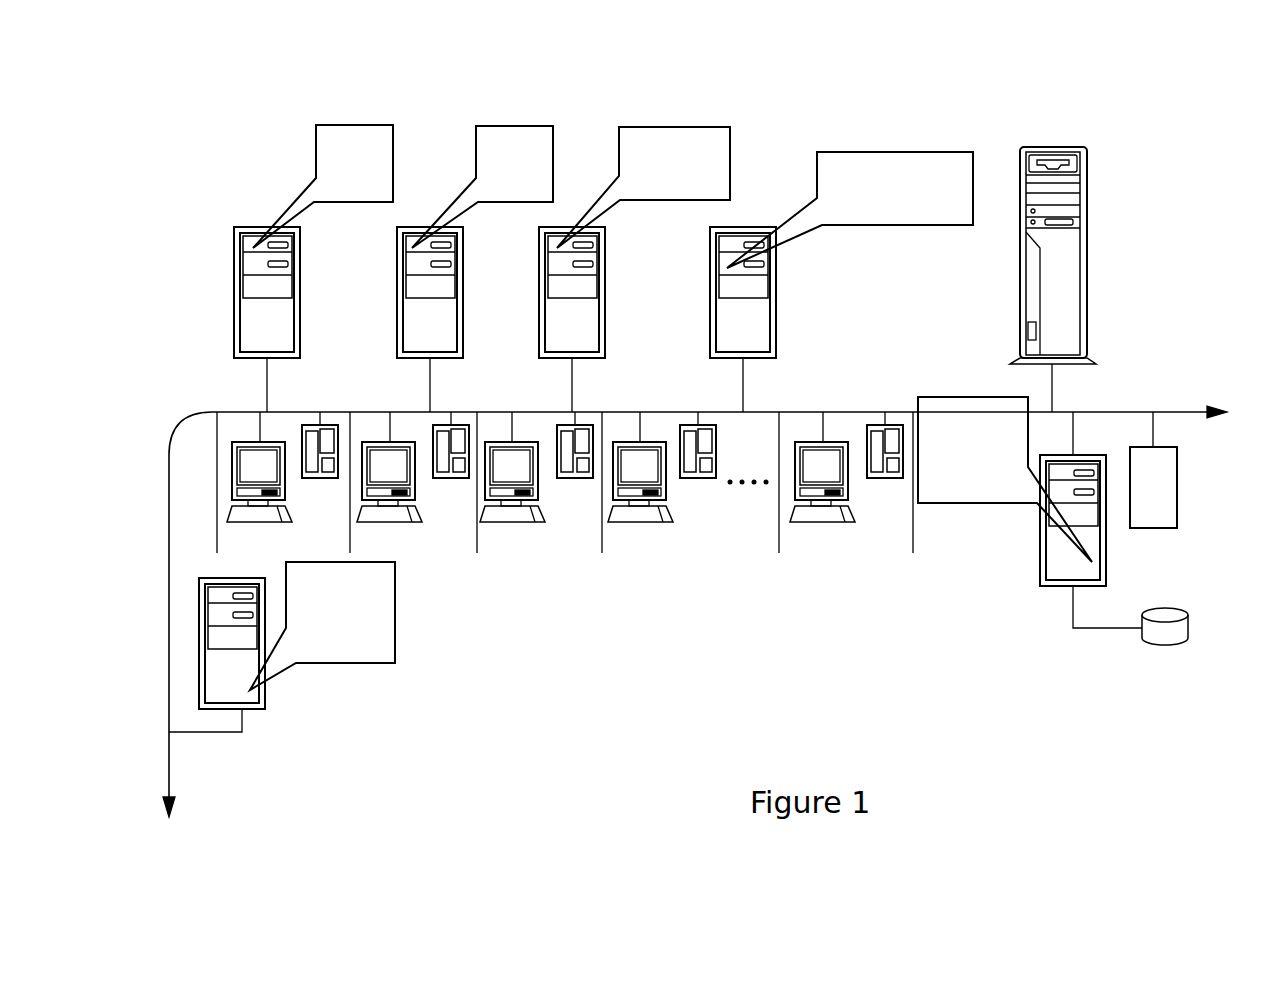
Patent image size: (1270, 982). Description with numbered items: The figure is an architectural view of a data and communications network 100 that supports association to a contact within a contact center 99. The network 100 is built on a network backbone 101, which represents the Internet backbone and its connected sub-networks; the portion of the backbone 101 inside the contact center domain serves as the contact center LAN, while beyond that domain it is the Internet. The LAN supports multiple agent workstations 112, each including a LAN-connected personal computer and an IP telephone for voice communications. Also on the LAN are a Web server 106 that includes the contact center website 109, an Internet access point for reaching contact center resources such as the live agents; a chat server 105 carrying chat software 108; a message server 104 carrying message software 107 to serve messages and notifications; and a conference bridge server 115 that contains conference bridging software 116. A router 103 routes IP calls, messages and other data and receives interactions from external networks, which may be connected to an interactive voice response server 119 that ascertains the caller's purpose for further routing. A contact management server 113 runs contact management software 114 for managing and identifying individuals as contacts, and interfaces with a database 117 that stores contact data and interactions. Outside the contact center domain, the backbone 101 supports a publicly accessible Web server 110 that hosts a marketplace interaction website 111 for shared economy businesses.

The contact center 99 is at (1096, 98).
The data and communications network 100 is at (560, 715).
The network backbone 101 is at (169, 553).
The router 103 is at (1020, 298).
The message server 104 is at (605, 318).
The chat server 105 is at (463, 318).
The Web server 106 is at (301, 318).
The message software 107 is at (666, 127).
The chat software 108 is at (515, 126).
The contact center website 109 is at (348, 125).
The publicly accessible Web server 110 is at (263, 692).
The marketplace interaction website 111 is at (395, 598).
The agent workstations 112 is at (658, 604).
The contact management server 113 is at (1040, 575).
The contact management software 114 is at (985, 397).
The conference bridge server 115 is at (776, 318).
The conference bridge 116 is at (885, 152).
The database 117 is at (1188, 628).
The interactive voice response server 119 is at (1177, 472).